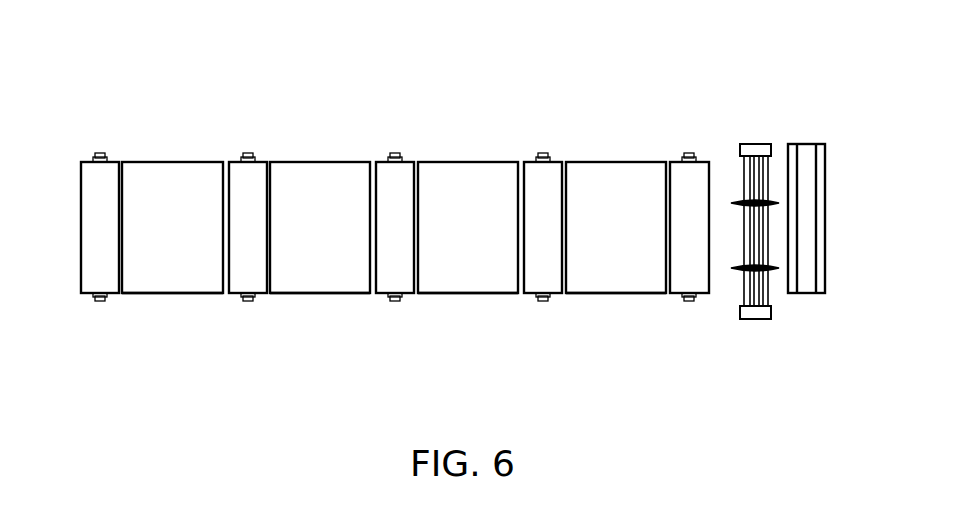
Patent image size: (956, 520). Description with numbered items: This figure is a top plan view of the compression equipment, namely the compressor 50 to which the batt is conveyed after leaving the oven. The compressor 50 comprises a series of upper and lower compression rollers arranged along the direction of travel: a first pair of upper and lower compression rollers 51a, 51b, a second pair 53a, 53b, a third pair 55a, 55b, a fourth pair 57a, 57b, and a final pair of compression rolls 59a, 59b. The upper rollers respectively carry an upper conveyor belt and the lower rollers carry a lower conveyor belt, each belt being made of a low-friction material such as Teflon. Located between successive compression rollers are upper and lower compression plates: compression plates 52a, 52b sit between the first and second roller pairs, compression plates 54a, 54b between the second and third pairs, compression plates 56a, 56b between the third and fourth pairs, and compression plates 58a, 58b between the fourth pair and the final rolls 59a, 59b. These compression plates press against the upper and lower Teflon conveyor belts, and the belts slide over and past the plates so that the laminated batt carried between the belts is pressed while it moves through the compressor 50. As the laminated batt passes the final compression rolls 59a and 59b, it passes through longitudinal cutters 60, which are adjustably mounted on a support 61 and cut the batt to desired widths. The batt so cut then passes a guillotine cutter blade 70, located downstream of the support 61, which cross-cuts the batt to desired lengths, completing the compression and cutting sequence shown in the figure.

The compressor 50 is at (603, 54).
The upper compression roller 51a is at (92, 170).
The lower compression roller 51b is at (92, 282).
The upper compression plate 52a is at (190, 241).
The lower compression plate 52b is at (180, 282).
The upper compression roller 53a is at (242, 170).
The lower compression roller 53b is at (235, 282).
The upper compression plate 54a is at (337, 241).
The lower compression plate 54b is at (327, 282).
The upper compression roller 55a is at (387, 171).
The lower compression roller 55b is at (386, 282).
The upper compression plate 56a is at (483, 241).
The lower compression plate 56b is at (468, 282).
The upper compression roller 57a is at (533, 172).
The lower compression roller 57b is at (534, 282).
The upper compression plate 58a is at (632, 241).
The lower compression plate 58b is at (618, 282).
The final upper compression roll 59a is at (680, 175).
The final lower compression roll 59b is at (683, 282).
The longitudinal cutters 60 is at (740, 202).
The support 61 is at (762, 145).
The guillotine cutter blade 70 is at (806, 153).